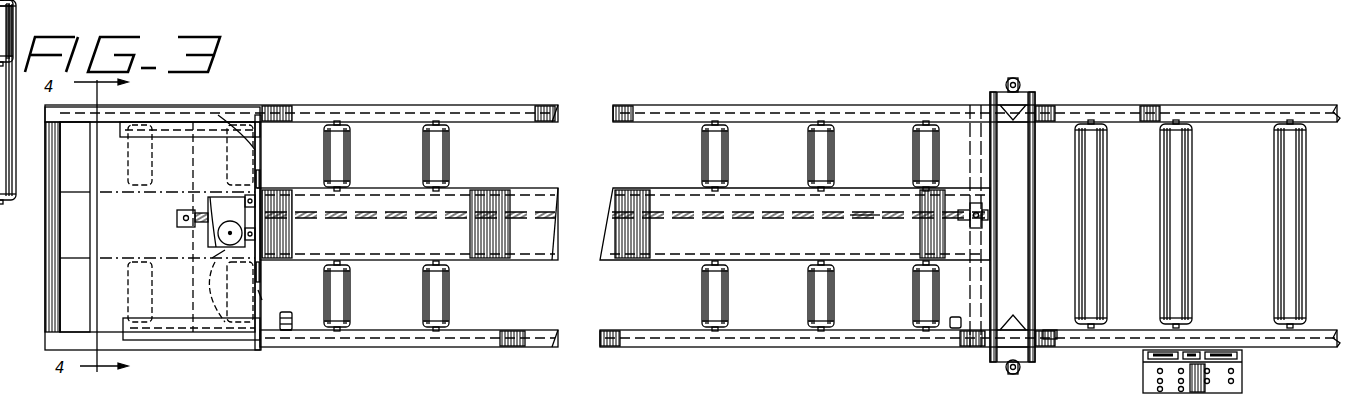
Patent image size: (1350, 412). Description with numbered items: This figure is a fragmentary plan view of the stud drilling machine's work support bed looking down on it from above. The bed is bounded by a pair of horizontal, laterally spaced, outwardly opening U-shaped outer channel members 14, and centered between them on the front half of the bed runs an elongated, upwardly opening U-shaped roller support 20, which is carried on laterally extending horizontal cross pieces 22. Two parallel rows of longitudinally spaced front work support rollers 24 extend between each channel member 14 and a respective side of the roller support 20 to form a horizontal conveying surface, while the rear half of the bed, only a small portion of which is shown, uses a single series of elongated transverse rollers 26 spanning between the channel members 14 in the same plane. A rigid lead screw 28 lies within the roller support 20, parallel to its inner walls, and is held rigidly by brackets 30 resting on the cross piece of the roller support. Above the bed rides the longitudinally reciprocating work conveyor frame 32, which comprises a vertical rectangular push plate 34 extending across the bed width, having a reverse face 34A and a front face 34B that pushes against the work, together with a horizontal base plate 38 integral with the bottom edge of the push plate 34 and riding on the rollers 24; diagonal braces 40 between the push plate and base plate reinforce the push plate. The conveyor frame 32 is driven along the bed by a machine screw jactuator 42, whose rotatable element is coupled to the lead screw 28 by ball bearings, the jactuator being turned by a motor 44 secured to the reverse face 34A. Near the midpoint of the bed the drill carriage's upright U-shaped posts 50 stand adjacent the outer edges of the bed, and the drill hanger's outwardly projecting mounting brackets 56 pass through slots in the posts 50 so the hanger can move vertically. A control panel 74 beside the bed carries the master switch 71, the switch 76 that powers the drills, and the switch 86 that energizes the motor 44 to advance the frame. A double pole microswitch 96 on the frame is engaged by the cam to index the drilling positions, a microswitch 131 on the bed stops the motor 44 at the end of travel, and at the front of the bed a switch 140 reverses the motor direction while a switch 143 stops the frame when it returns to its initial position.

The outer channel member 14 is at (730, 108).
The roller support 20 is at (762, 198).
The cross piece 22 is at (973, 140).
The front work support roller 24 is at (452, 160).
The transverse roller 26 is at (1282, 188).
The lead screw 28 is at (862, 208).
The bracket 30 is at (968, 222).
The work conveyor frame 32 is at (243, 107).
The push plate 34 is at (266, 305).
The reverse face 34A is at (240, 115).
The front face 34B is at (262, 180).
The base plate 38 is at (138, 231).
The diagonal brace 40 is at (165, 130).
The machine screw jactuator 42 is at (215, 208).
The motor 44 is at (247, 340).
The post 50 is at (1000, 362).
The mounting bracket 56 is at (1008, 375).
The master switch 71 is at (1148, 356).
The control panel 74 is at (1240, 385).
The switch 76 is at (1225, 352).
The switch 86 is at (1192, 352).
The double pole microswitch 96 is at (1050, 330).
The microswitch 131 is at (953, 329).
The switch 140 is at (295, 325).
The switch 143 is at (293, 318).